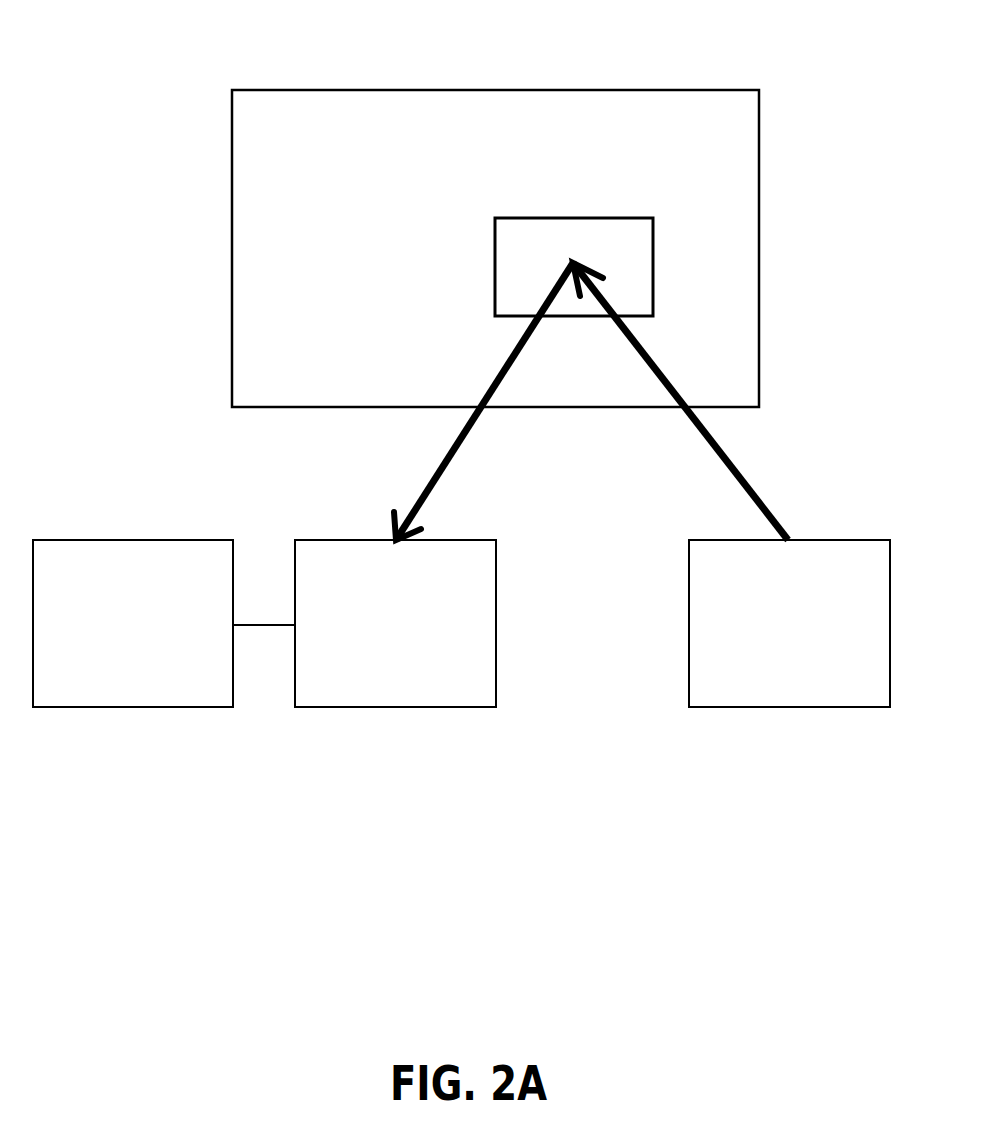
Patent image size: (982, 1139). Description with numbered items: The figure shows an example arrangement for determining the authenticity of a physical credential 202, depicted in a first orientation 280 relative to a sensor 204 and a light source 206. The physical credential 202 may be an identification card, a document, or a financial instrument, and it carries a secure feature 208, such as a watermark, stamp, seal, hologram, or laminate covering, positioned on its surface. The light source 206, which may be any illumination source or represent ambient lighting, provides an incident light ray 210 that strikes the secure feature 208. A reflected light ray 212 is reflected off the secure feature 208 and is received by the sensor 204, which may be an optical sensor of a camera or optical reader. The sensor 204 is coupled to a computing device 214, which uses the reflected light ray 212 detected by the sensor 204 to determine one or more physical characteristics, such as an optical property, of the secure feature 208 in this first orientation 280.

The first orientation 280 is at (186, 57).
The physical credential 202 is at (759, 163).
The secure feature 208 is at (495, 247).
The incident light ray 210 is at (755, 485).
The reflected light ray 212 is at (473, 430).
The sensor 204 is at (372, 655).
The light source 206 is at (766, 655).
The computing device 214 is at (109, 671).